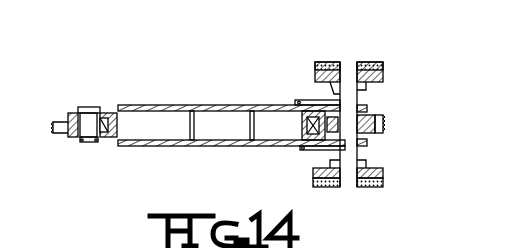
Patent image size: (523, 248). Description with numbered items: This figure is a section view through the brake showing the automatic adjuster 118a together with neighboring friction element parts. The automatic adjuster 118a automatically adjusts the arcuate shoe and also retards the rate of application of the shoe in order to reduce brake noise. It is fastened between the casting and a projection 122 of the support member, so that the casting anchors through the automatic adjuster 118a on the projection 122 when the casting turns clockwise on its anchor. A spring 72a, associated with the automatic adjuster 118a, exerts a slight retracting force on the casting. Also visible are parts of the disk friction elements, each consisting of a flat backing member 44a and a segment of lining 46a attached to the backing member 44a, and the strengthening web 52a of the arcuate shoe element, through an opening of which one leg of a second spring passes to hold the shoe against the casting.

The automatic adjuster 118a is at (193, 105).
The projection of the support member 122 is at (63, 131).
The spring 72a is at (302, 150).
The flat backing member 44a is at (384, 71).
The segment of lining 46a is at (367, 60).
The strengthening web 52a is at (384, 123).